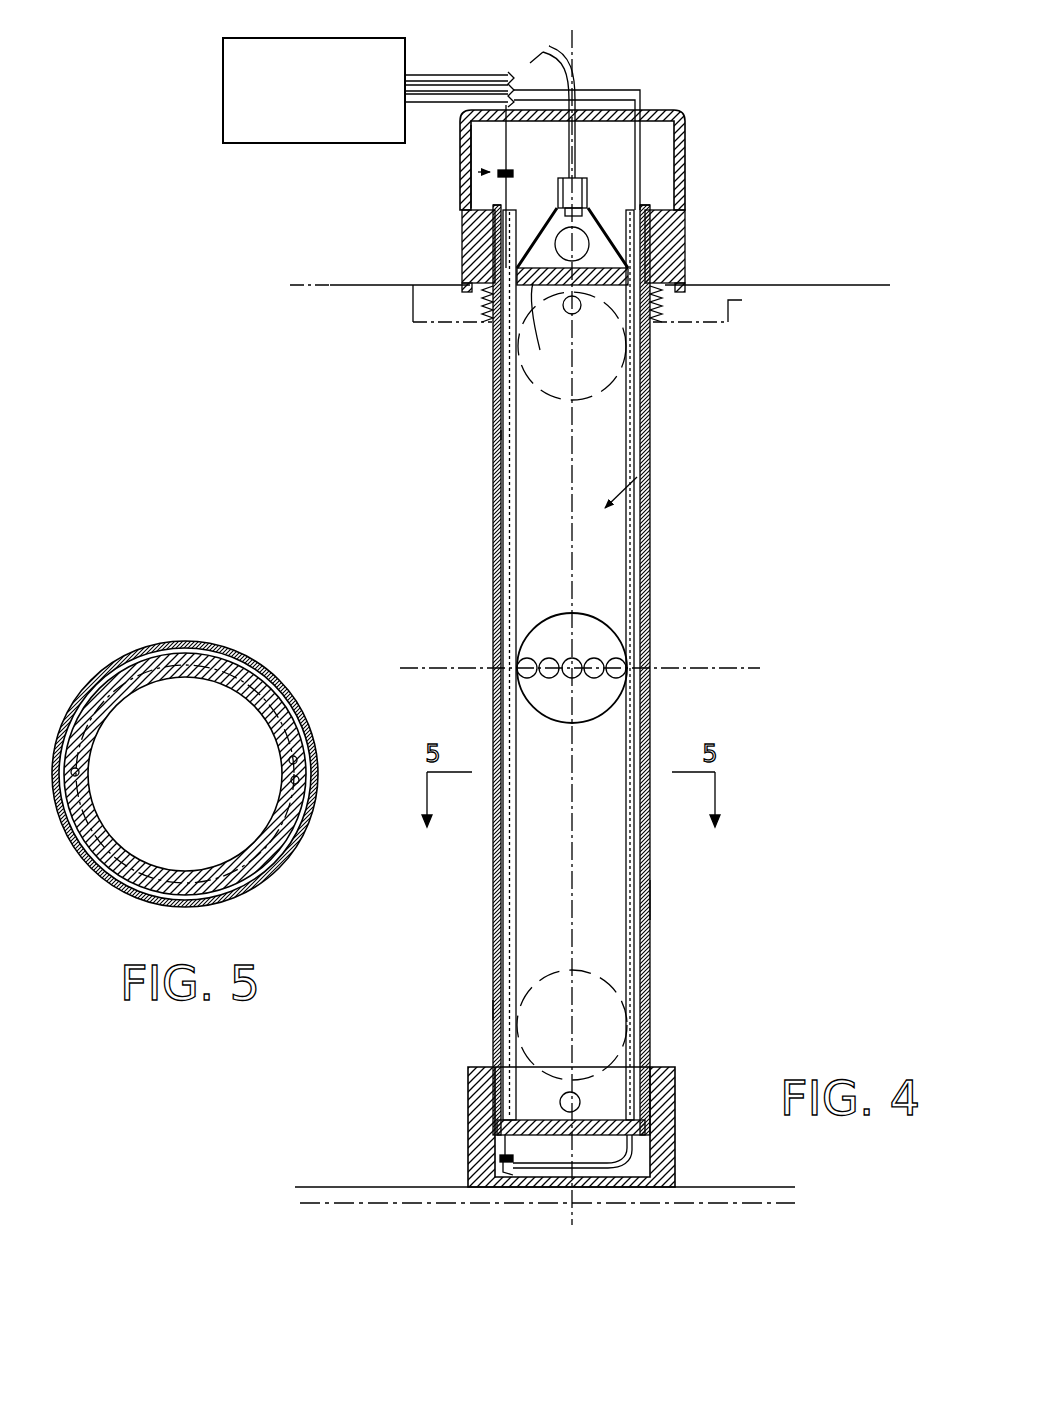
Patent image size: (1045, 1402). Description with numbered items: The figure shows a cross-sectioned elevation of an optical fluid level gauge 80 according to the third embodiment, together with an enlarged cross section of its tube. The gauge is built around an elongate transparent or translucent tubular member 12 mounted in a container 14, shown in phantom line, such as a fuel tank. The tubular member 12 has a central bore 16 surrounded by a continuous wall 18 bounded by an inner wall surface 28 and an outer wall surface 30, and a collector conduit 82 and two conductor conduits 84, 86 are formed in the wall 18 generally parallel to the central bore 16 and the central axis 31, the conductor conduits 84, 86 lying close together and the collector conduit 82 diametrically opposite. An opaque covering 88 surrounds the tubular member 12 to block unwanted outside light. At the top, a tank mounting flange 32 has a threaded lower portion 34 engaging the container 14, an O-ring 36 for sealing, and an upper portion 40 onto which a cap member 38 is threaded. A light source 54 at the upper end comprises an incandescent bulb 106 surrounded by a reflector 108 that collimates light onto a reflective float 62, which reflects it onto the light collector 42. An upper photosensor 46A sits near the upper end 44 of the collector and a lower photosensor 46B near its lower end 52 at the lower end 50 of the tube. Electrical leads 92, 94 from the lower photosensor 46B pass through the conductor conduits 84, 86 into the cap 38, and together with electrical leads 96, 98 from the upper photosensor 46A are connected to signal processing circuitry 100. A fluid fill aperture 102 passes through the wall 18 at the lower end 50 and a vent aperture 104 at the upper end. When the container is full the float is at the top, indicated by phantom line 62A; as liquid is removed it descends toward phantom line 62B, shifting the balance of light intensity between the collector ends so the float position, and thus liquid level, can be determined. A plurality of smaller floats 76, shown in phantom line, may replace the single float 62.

In FIG. 4, the tubular member 12 is at (660, 622).
In FIG. 5, the tubular member 12 is at (178, 636).
In FIG. 4, the container 14 is at (300, 288).
In FIG. 4, the central bore 16 is at (650, 468).
In FIG. 4, the wall 18 is at (650, 533).
In FIG. 5, the wall 18 is at (243, 678).
In FIG. 4, the inner wall surface 28 is at (531, 452).
In FIG. 4, the outer wall surface 30 is at (494, 435).
In FIG. 4, the central axis 31 is at (572, 932).
In FIG. 4, the tank mounting flange 32 is at (688, 263).
In FIG. 4, the threaded lower portion 34 is at (660, 302).
In FIG. 4, the O-ring 36 is at (481, 276).
In FIG. 4, the cap member 38 is at (688, 122).
In FIG. 4, the upper portion 40 is at (683, 228).
In FIG. 4, the light collector 42 is at (470, 200).
In FIG. 4, the upper end 44 is at (505, 205).
In FIG. 4, the upper photosensor 46A is at (477, 172).
In FIG. 4, the lower photosensor 46B is at (500, 1160).
In FIG. 4, the lower end 50 is at (493, 1010).
In FIG. 4, the lower end 52 is at (470, 1070).
In FIG. 4, the light source 54 is at (612, 186).
In FIG. 4, the float 62 is at (555, 638).
In FIG. 4, the phantom line 62A is at (640, 400).
In FIG. 4, the phantom line 62B is at (655, 962).
In FIG. 4, the plurality of floats 76 is at (616, 680).
In FIG. 4, the fluid level gauge 80 is at (860, 122).
In FIG. 5, the collector conduit 82 is at (80, 772).
In FIG. 5, the conductor conduit 84 is at (288, 760).
In FIG. 5, the conductor conduit 86 is at (290, 780).
In FIG. 4, the opaque covering 88 is at (650, 900).
In FIG. 5, the opaque covering 88 is at (127, 651).
In FIG. 4, the electrical lead 92 is at (598, 95).
In FIG. 4, the electrical lead 94 is at (618, 92).
In FIG. 4, the electrical lead 96 is at (458, 82).
In FIG. 4, the electrical lead 98 is at (428, 76).
In FIG. 4, the signal processing circuitry 100 is at (243, 108).
In FIG. 4, the fluid fill aperture 102 is at (650, 1040).
In FIG. 4, the vent aperture 104 is at (572, 314).
In FIG. 4, the incandescent bulb 106 is at (533, 284).
In FIG. 4, the reflector 108 is at (604, 232).